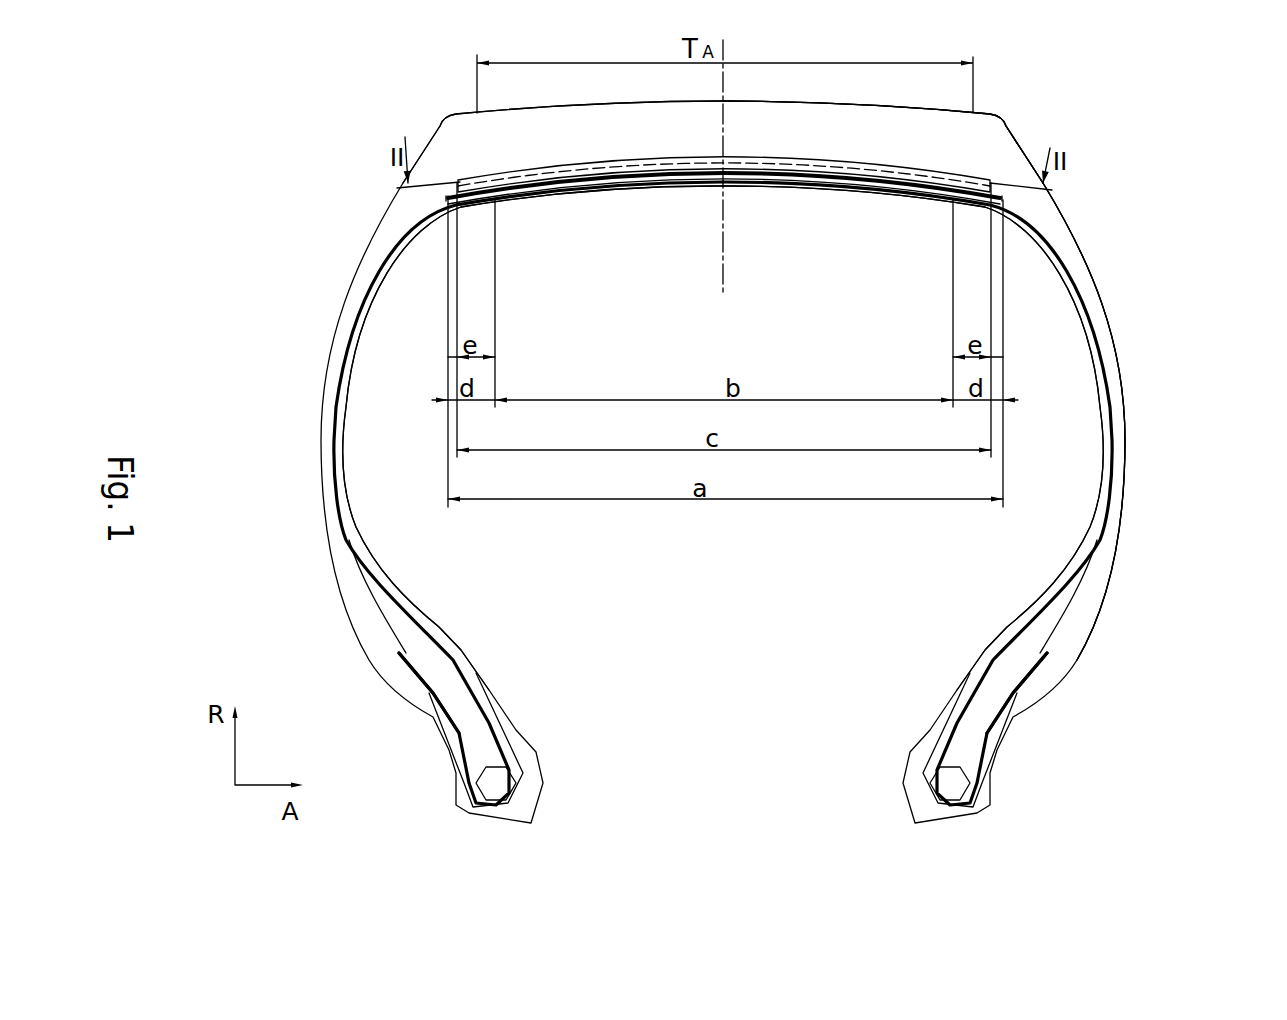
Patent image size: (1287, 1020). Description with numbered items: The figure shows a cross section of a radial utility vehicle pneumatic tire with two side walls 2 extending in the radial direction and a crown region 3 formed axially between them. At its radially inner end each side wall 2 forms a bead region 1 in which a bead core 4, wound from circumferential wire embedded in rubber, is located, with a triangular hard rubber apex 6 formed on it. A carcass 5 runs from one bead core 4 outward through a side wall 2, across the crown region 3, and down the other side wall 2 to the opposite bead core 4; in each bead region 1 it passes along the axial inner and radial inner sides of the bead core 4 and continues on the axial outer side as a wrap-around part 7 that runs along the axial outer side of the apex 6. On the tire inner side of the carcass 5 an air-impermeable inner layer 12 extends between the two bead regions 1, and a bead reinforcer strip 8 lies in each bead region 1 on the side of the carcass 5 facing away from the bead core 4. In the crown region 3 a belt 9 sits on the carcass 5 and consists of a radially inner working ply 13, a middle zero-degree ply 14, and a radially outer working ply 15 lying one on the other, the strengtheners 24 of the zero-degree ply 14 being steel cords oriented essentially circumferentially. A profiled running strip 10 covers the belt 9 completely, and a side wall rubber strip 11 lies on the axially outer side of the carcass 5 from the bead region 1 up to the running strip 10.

The bead region 1 is at (997, 773).
The side wall 2 is at (1128, 487).
The crown region 3 is at (780, 102).
The bead core 4 is at (952, 783).
The carcass 5 is at (1100, 540).
The apex (bead filler) 6 is at (1033, 638).
The wrap-around part 7 is at (1023, 683).
The bead reinforcer strip 8 is at (923, 740).
The belt 9 is at (945, 170).
The profiled running strip 10 is at (838, 143).
The side wall rubber strip 11 is at (1120, 405).
The inner layer 12 is at (1105, 400).
The radially inner belt ply (working ply) 13 is at (943, 190).
The belt ply (0° ply) 14 is at (866, 178).
The radially outer belt ply (working ply) 15 is at (1042, 106).
The strengtheners 24 is at (820, 188).